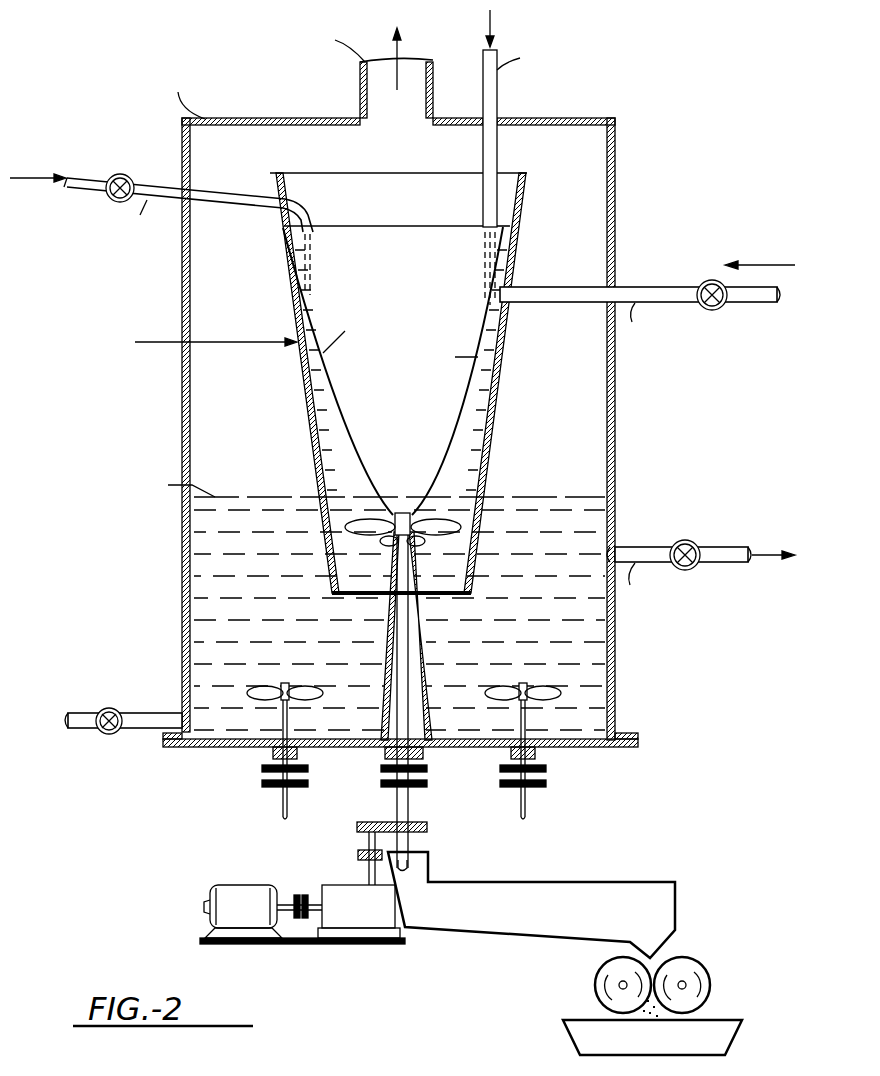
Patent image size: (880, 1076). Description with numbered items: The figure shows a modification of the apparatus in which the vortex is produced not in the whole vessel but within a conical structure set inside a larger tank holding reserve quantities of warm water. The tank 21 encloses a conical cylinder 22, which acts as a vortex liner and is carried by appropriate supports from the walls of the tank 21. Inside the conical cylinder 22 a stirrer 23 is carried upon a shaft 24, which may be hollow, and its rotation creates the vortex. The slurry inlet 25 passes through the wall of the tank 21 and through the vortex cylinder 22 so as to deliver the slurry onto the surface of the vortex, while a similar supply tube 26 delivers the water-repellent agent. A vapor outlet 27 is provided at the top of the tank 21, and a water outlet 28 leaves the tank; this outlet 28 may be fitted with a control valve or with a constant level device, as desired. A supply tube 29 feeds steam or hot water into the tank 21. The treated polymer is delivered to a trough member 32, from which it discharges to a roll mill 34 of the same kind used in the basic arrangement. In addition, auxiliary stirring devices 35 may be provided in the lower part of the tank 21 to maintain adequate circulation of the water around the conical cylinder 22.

The tank 21 is at (615, 197).
The conical cylinder 22 is at (497, 416).
The stirrer 23 is at (305, 600).
The shaft 24 is at (383, 715).
The slurry inlet 25 is at (233, 200).
The supply tube 26 is at (497, 97).
The vapor outlet 27 is at (360, 95).
The water outlet 28 is at (650, 547).
The supply tube 29 is at (657, 287).
The trough member 32 is at (600, 882).
The roll mill 34 is at (640, 982).
The auxiliary stirring devices 35 is at (265, 700).